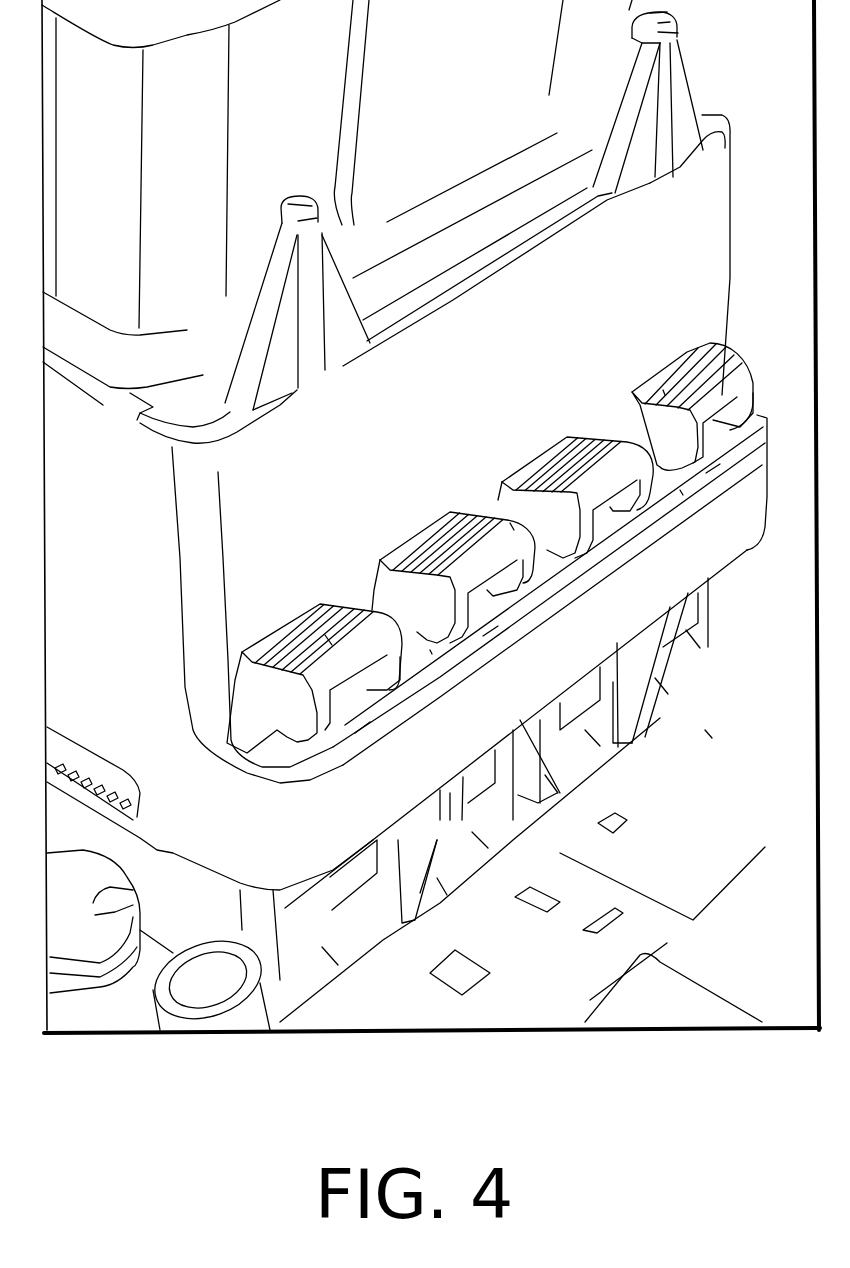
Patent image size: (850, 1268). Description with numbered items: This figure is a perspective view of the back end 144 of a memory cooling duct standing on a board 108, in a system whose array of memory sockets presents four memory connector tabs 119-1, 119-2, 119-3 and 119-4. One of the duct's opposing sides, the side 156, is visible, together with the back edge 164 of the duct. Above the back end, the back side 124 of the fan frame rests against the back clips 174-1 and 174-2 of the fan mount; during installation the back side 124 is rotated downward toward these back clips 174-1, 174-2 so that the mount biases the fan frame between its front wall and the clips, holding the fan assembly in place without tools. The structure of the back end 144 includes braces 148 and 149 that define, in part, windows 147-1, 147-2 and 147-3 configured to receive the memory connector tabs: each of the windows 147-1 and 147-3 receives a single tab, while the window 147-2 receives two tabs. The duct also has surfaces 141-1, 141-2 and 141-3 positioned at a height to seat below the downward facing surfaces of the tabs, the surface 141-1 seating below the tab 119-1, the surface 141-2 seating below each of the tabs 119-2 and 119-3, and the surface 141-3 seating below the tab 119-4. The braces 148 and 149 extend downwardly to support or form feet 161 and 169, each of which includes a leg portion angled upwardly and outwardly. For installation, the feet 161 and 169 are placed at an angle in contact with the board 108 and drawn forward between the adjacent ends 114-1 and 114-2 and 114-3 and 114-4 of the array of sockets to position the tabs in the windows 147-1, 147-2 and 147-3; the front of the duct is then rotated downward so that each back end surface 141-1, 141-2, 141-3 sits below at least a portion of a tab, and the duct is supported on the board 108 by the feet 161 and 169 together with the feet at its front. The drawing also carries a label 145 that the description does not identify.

The board 108 is at (783, 949).
The end of the array of sockets 114-1 is at (330, 957).
The end of the array of sockets 114-2 is at (480, 840).
The end of the array of sockets 114-3 is at (592, 738).
The end of the array of sockets 114-4 is at (692, 638).
The memory connector tab 119-1 is at (302, 707).
The memory connector tab 119-2 is at (483, 563).
The memory connector tab 119-3 is at (613, 477).
The memory connector tab 119-4 is at (719, 395).
The back side of the fan frame 124 is at (469, 93).
The surface 141-1 is at (362, 727).
The surface 141-2 is at (490, 630).
The surface 141-3 is at (713, 467).
The back end 144 is at (710, 736).
The mounting block 145 is at (583, 653).
The window 147-1 is at (325, 635).
The window 147-2 is at (510, 523).
The window 147-3 is at (663, 390).
The brace 148 is at (430, 650).
The brace 149 is at (680, 490).
The side 156 is at (136, 593).
The foot 161 is at (433, 888).
The back edge 164 is at (548, 780).
The foot 169 is at (658, 682).
The back clip 174-1 is at (311, 330).
The back clip 174-2 is at (668, 157).